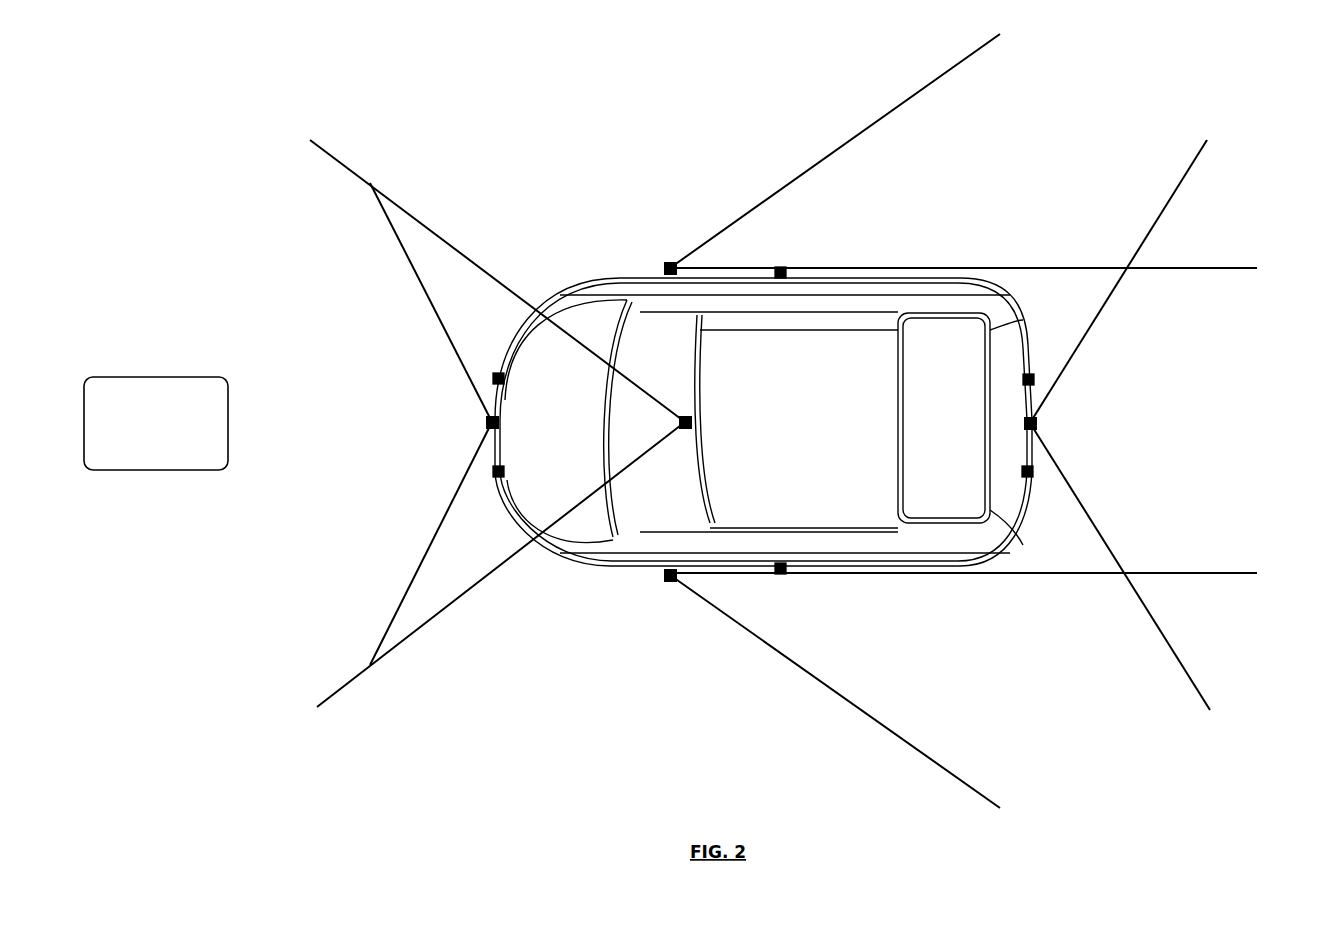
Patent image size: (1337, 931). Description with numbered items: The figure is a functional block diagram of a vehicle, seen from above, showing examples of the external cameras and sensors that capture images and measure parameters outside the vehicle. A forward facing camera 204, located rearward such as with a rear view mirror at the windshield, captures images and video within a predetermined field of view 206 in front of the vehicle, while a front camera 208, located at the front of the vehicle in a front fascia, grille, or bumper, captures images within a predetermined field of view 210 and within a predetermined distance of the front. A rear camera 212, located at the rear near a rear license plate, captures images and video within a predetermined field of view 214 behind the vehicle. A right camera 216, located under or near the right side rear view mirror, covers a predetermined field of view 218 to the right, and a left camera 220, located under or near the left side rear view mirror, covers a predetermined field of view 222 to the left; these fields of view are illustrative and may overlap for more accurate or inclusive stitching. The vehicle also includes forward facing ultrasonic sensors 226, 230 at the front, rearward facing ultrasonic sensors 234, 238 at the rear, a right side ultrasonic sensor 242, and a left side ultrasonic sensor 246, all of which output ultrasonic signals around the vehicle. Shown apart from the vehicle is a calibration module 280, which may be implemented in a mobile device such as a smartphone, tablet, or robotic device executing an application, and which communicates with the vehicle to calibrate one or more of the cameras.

The forward facing camera 204 is at (690, 422).
The predetermined field of view 206 is at (477, 262).
The front camera 208 is at (488, 422).
The predetermined field of view 210 is at (410, 267).
The rear camera 212 is at (1037, 423).
The predetermined field of view 214 is at (1193, 170).
The right camera 216 is at (670, 263).
The predetermined field of view 218 is at (920, 95).
The left camera 220 is at (672, 583).
The predetermined field of view 222 is at (918, 750).
The forward facing ultrasonic sensor 226 is at (492, 378).
The forward facing ultrasonic sensor 230 is at (492, 471).
The rearward facing ultrasonic sensor 234 is at (1035, 378).
The rearward facing ultrasonic sensor 238 is at (1034, 471).
The right side ultrasonic sensor 242 is at (783, 280).
The left side ultrasonic sensor 246 is at (783, 576).
The calibration module 280 is at (177, 375).